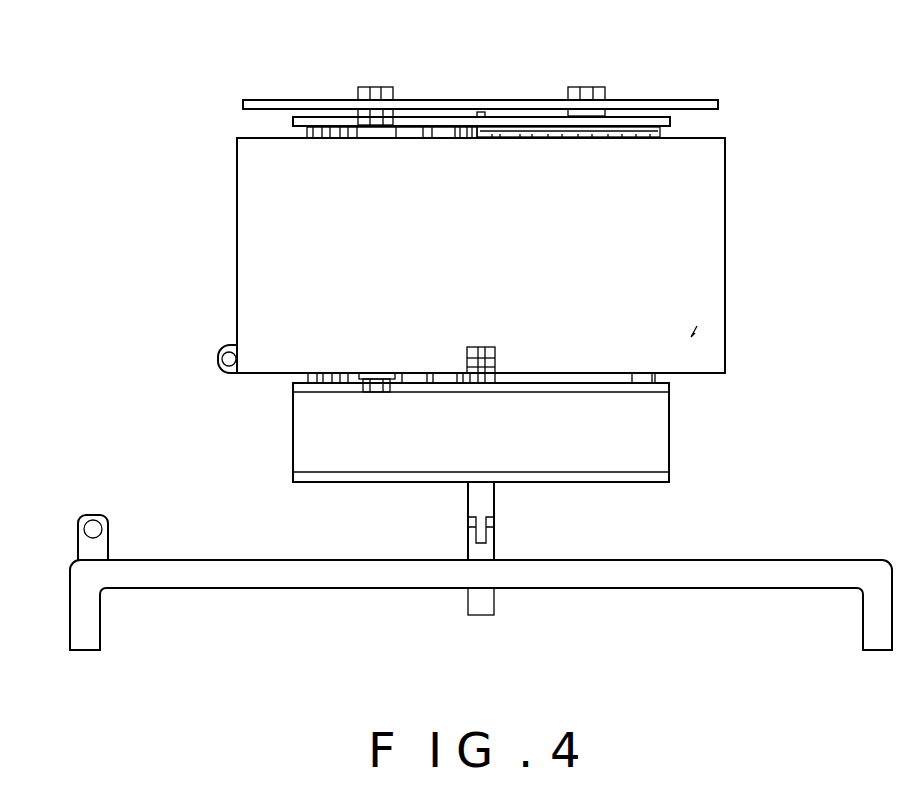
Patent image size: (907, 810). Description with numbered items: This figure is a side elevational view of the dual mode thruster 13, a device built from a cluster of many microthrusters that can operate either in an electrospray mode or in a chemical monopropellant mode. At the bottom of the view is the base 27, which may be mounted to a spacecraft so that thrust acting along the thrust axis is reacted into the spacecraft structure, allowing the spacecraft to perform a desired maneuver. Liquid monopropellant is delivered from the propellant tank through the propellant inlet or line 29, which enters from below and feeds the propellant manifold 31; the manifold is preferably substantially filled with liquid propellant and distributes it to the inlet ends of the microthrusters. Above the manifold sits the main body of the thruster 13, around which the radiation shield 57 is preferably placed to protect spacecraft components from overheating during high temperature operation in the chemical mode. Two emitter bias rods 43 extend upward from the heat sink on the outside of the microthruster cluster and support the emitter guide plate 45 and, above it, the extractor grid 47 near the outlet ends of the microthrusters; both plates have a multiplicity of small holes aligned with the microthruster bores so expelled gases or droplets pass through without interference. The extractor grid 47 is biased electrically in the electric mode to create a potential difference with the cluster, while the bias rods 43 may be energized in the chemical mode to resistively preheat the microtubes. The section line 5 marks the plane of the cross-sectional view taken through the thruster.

The section line 5- 5 is at (482, 112).
The thruster 13 is at (752, 268).
The base 27 is at (675, 590).
The propellant inlet or line 29 is at (468, 608).
The propellant manifold 31 is at (669, 459).
The emitter bias rods 43 is at (383, 87).
The emitter guide plate 45 is at (295, 125).
The extractor grid 47 is at (297, 98).
The radiation shield 57 is at (697, 331).